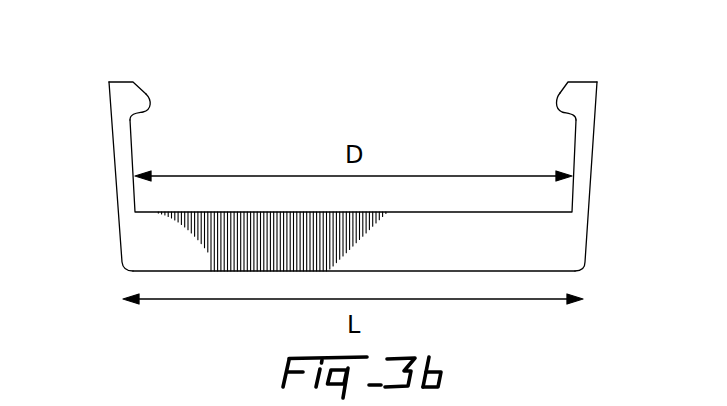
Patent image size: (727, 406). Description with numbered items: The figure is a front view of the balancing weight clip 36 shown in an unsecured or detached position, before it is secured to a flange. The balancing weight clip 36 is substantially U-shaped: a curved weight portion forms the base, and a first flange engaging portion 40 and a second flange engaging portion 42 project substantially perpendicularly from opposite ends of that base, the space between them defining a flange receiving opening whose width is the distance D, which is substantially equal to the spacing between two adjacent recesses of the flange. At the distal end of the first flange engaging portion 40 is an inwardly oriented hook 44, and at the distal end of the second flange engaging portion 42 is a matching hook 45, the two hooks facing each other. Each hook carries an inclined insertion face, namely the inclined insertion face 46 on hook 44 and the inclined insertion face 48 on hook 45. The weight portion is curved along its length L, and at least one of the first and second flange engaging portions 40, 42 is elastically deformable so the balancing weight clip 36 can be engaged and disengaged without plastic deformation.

The balancing weight clip 36 is at (367, 97).
The first flange engaging portion 40 is at (121, 143).
The second flange engaging portion 42 is at (585, 147).
The hook 44 is at (122, 95).
The hook 45 is at (582, 93).
The inclined insertion face 46 is at (147, 90).
The inclined insertion face 48 is at (565, 90).